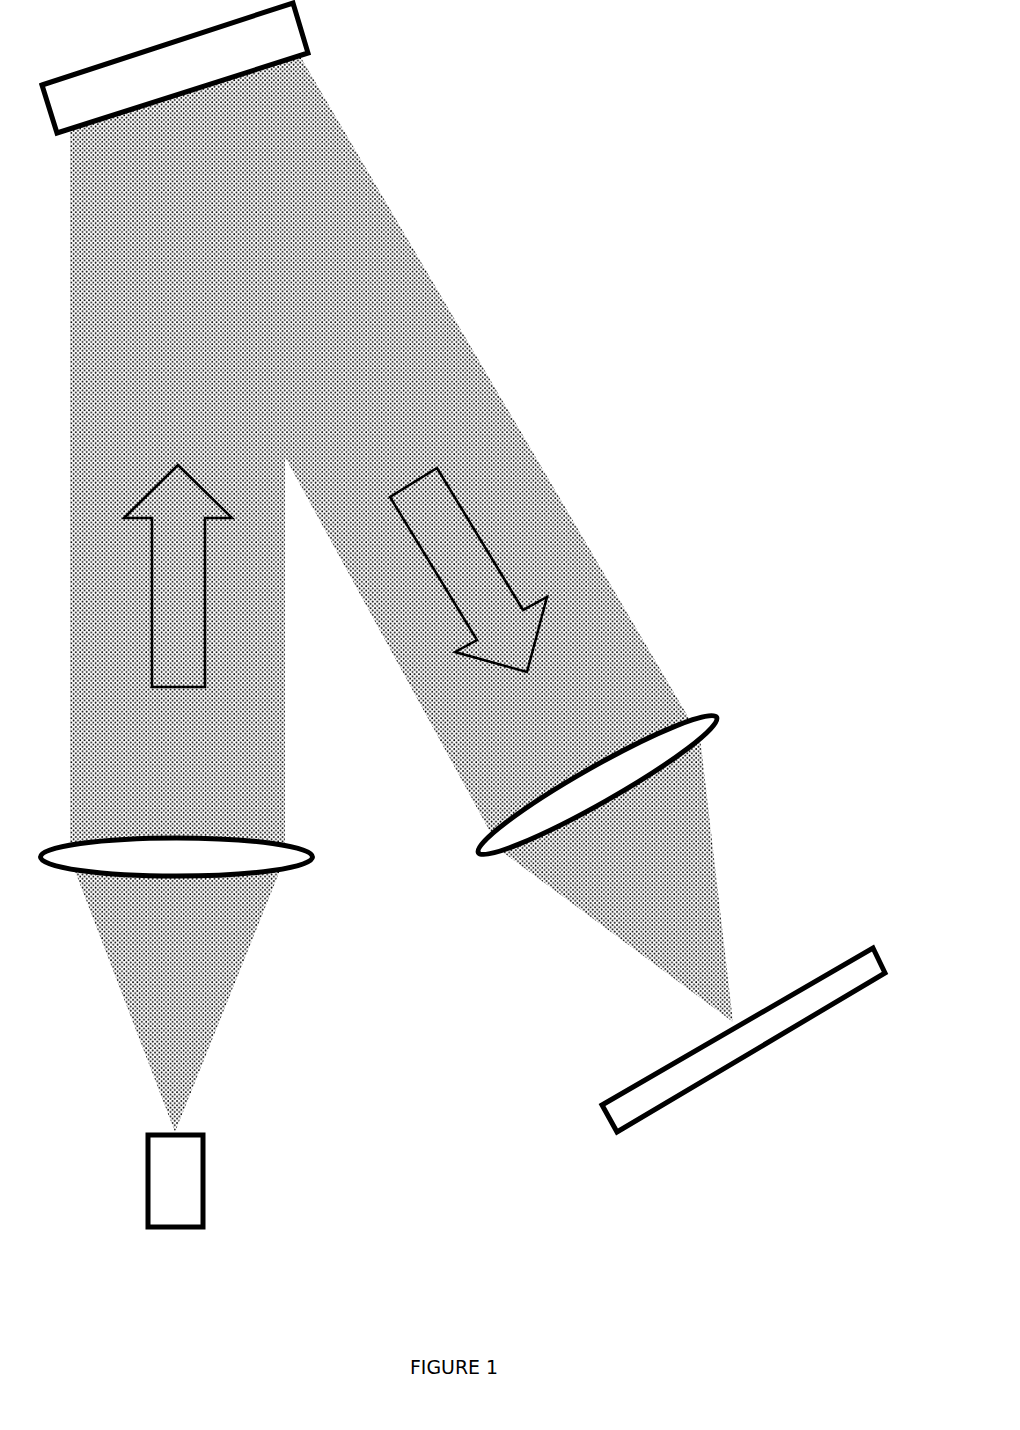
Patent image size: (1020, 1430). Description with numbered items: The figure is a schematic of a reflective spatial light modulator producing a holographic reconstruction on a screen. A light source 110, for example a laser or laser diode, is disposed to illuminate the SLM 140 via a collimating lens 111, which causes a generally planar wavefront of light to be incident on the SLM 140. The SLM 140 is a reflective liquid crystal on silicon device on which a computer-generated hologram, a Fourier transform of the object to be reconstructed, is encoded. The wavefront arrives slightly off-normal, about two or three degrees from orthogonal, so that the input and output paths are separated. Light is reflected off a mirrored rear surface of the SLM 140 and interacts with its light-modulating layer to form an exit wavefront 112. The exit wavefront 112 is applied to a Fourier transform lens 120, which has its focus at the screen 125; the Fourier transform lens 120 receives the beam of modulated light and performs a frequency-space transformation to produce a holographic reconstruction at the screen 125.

The light source 110 is at (203, 1187).
The collimating lens 111 is at (297, 867).
The exit wavefront 112 is at (525, 510).
The Fourier transform lens 120 is at (697, 713).
The screen 125 is at (675, 1097).
The SLM 140 is at (308, 40).